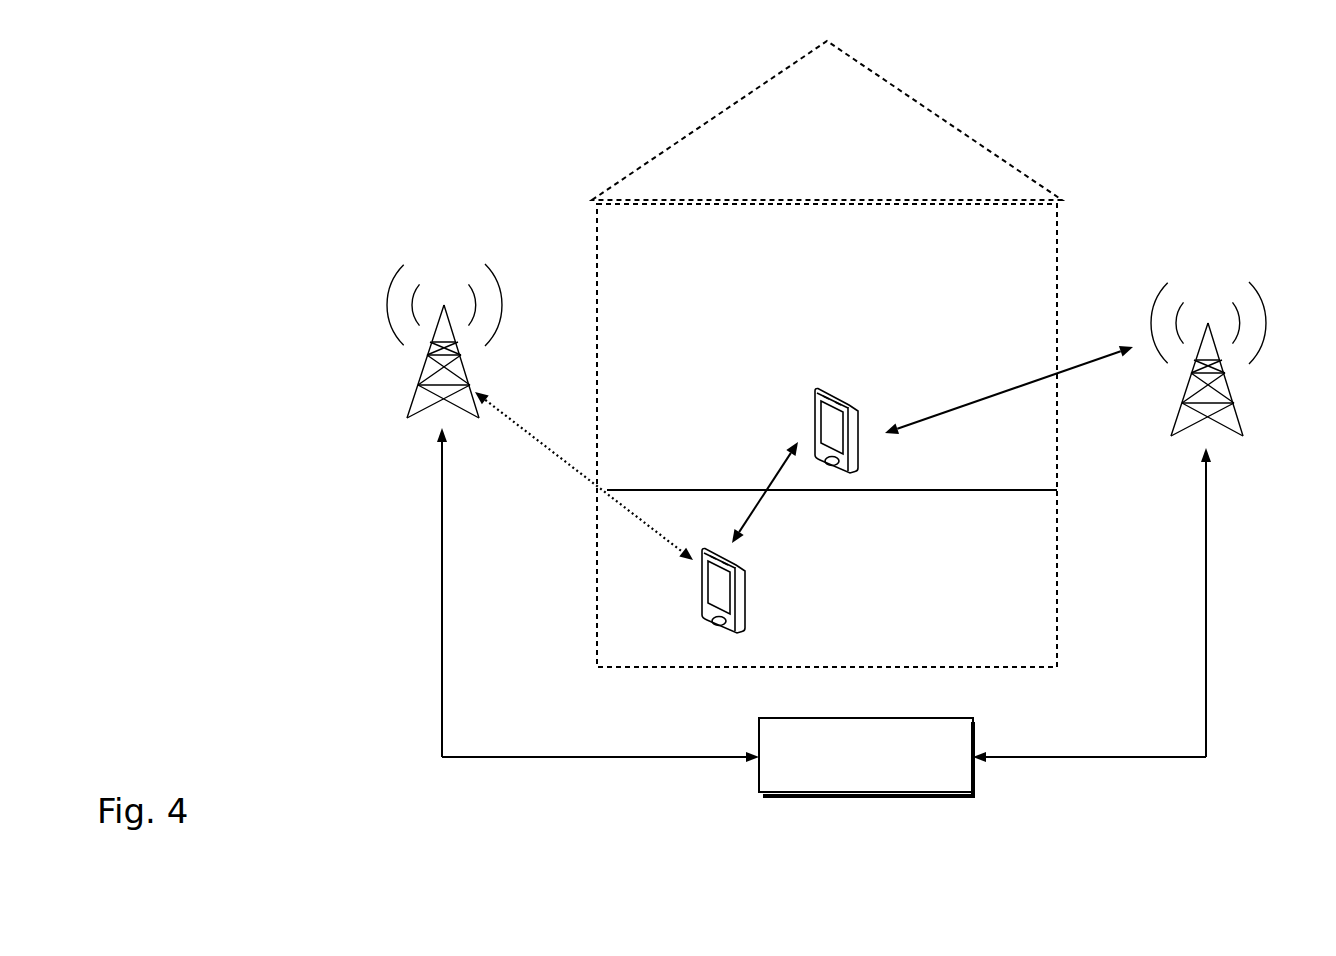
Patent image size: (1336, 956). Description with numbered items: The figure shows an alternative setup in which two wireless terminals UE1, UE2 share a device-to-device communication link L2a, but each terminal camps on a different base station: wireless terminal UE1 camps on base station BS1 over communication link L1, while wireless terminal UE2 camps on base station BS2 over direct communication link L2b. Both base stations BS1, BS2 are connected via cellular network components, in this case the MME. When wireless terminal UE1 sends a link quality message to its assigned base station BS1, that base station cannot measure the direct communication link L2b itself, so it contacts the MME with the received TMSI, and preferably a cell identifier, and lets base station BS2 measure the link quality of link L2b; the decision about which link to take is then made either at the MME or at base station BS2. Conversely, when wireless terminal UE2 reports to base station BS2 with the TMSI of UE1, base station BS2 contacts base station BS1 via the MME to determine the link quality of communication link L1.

The base station BS1 is at (421, 329).
The base station BS2 is at (1228, 349).
The wireless terminal UE1 is at (726, 607).
The wireless terminal UE2 is at (807, 429).
The communication link L1 is at (584, 476).
The device-to-device communication link L2a is at (772, 492).
The direct communication link L2b is at (1009, 390).
The element MME is at (866, 757).